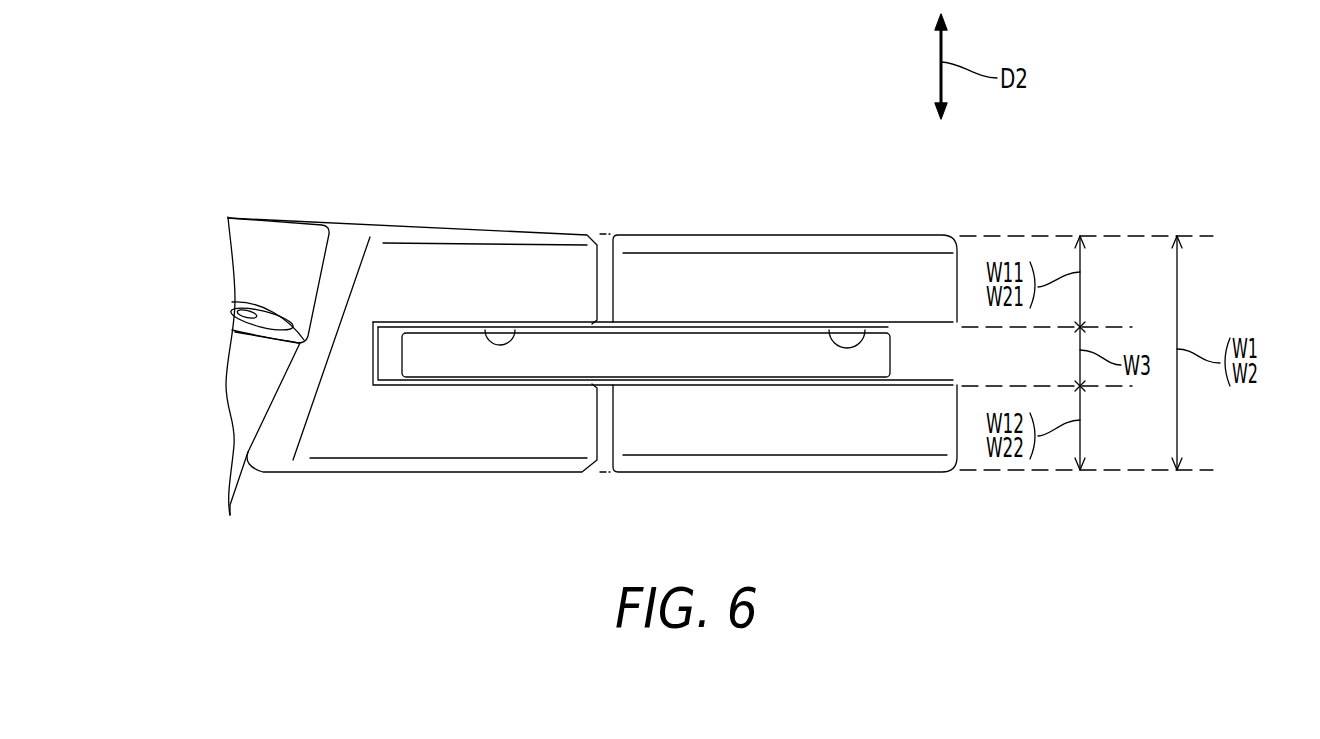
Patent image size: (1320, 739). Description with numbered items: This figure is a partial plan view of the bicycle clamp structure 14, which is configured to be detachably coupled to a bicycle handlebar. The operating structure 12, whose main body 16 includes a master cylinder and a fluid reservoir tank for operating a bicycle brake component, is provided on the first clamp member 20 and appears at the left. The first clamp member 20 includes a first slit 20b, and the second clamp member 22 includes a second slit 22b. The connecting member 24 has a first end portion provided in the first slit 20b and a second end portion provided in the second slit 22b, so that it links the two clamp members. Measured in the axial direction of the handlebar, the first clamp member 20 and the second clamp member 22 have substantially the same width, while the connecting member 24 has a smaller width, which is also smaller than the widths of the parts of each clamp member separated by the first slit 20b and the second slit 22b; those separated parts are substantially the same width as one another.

The operating structure 12 is at (208, 212).
The bicycle clamp structure 14 is at (630, 157).
The main body 16 is at (222, 256).
The first clamp member 20 is at (455, 227).
The first slit 20b is at (515, 328).
The second clamp member 22 is at (803, 235).
The second slit 22b is at (867, 327).
The connecting member 24 is at (895, 357).